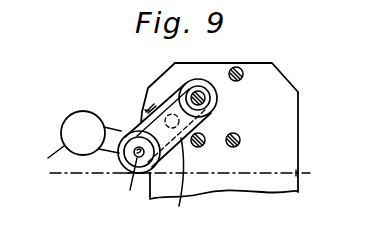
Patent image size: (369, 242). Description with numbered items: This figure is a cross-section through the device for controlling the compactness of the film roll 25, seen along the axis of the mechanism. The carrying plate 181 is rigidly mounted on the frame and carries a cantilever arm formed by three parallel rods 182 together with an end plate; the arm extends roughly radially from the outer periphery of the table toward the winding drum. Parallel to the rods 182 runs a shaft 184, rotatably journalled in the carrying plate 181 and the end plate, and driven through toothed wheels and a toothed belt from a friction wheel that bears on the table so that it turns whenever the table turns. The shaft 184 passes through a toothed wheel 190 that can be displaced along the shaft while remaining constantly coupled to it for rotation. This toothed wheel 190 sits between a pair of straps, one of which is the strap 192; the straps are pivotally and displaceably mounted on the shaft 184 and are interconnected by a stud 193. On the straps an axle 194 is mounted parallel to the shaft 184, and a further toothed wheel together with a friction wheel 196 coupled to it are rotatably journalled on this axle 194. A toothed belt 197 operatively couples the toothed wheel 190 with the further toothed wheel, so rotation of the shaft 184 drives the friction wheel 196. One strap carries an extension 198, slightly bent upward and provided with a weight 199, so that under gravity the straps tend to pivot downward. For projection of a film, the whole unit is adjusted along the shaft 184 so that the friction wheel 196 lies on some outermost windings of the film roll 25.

The film roll 25 is at (304, 174).
The carrying plate 181 is at (300, 114).
The parallel rods 182 is at (244, 68).
The shaft 184 is at (206, 100).
The toothed wheel 190 is at (172, 71).
The strap 192 is at (130, 190).
The stud 193 is at (150, 103).
The axle 194 is at (128, 170).
The friction wheel 196 is at (124, 172).
The toothed belt 197 is at (192, 183).
The extension 198 is at (115, 120).
The weight 199 is at (41, 158).